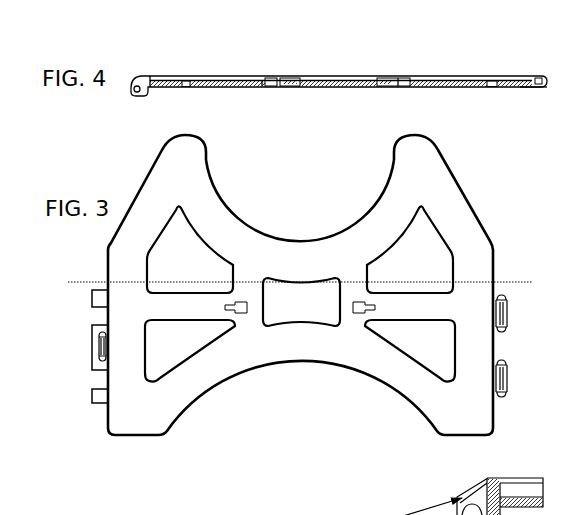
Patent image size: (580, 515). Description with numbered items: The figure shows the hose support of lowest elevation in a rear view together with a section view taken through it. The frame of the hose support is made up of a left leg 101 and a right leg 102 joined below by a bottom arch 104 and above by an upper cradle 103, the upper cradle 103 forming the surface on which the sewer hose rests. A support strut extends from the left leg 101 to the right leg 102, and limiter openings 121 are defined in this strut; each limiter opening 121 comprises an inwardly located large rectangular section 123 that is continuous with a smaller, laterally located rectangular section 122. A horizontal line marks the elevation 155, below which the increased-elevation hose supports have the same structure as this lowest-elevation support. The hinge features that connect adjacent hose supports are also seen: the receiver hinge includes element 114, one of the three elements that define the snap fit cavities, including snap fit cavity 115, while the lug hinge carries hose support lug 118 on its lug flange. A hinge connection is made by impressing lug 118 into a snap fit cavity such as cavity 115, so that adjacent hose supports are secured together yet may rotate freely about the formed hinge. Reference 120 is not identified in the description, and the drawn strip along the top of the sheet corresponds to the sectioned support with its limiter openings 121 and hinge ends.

In FIG. 3, the left leg 101 is at (445, 200).
In FIG. 3, the right leg 102 is at (145, 197).
In FIG. 3, the upper cradle 103 is at (302, 253).
In FIG. 3, the bottom arch 104 is at (382, 367).
In FIG. 3, the elevation 155 is at (276, 281).
In FIG. 4, the receiver hinge element 114 is at (537, 90).
In FIG. 4, the snap fit cavity 115 is at (542, 77).
In FIG. 4, the hose support lug 118 is at (133, 88).
In FIG. 4, the rail body 120 is at (142, 78).
In FIG. 4, the limiter opening 121 is at (398, 82).
In FIG. 4, the smaller laterally located rectangular section 122 is at (267, 80).
In FIG. 4, the large rectangular section 123 is at (278, 82).